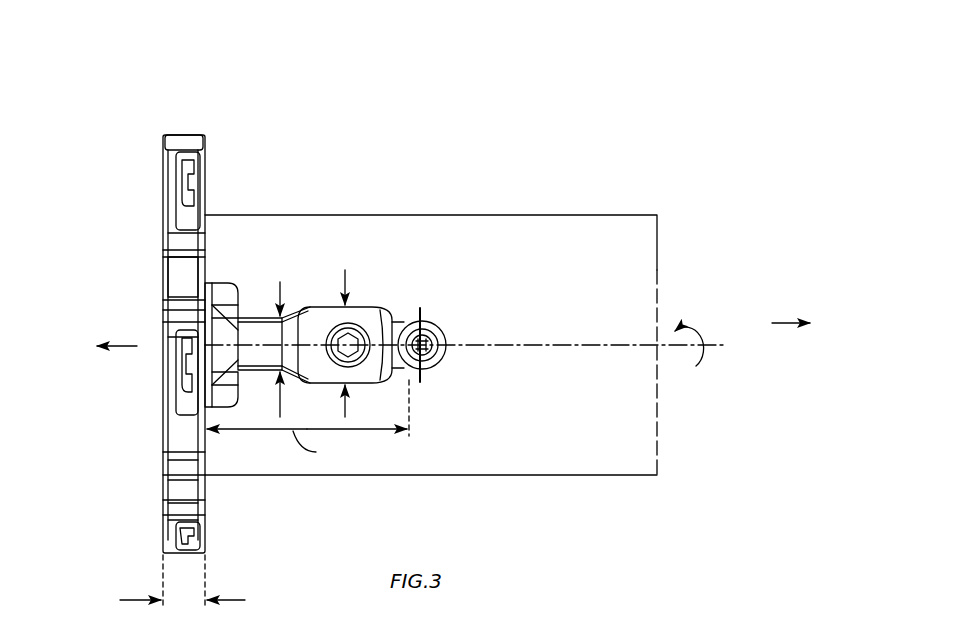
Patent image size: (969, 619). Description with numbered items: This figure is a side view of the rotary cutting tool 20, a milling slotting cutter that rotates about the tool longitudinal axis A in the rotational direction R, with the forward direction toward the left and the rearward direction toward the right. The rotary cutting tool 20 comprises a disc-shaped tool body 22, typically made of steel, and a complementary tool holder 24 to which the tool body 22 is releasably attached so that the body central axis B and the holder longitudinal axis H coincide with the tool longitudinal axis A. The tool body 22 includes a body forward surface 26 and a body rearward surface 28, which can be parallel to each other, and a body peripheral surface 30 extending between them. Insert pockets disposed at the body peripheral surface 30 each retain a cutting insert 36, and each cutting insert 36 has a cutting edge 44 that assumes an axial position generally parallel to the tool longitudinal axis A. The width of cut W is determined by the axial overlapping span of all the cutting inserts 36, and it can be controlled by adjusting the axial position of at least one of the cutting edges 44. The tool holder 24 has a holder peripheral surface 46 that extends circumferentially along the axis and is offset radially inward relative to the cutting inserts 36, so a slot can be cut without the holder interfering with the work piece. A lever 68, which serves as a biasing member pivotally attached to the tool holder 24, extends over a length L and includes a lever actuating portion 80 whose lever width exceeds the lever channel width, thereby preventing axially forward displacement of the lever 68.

The rotary cutting tool 20 is at (616, 148).
The tool body 22 is at (180, 118).
The tool holder 24 is at (424, 204).
The body forward surface 26 is at (163, 252).
The body rearward surface 28 is at (205, 252).
The body peripheral surface 30 is at (183, 267).
The cutting insert 36 is at (205, 172).
The cutting edge 44 is at (187, 135).
The holder peripheral surface 46 is at (640, 265).
The lever 68 is at (313, 330).
The lever actuating portion 80 is at (357, 312).